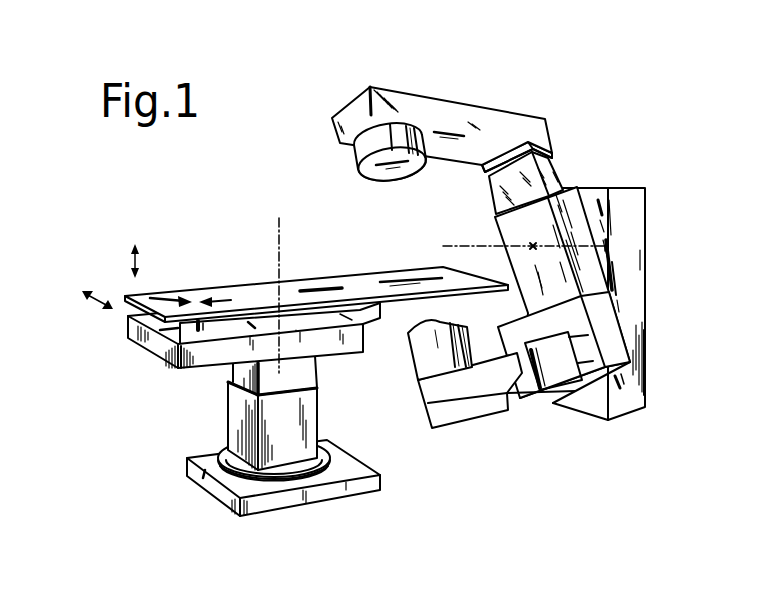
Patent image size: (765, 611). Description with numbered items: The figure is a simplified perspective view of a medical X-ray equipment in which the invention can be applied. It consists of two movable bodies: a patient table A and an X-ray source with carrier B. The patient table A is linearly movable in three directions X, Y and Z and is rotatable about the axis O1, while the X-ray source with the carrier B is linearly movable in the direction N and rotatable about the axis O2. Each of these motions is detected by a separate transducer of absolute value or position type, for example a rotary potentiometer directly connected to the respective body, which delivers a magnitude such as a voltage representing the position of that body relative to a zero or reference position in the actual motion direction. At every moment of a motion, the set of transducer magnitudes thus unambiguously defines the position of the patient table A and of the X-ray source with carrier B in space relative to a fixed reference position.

The patient table A is at (316, 357).
The X-ray source with carrier B is at (455, 257).
The motion direction N is at (487, 185).
The rotation axis O1 is at (291, 227).
The rotation axis O2 is at (455, 236).
The motion direction X is at (197, 296).
The motion direction Y is at (127, 261).
The motion direction Z is at (96, 304).